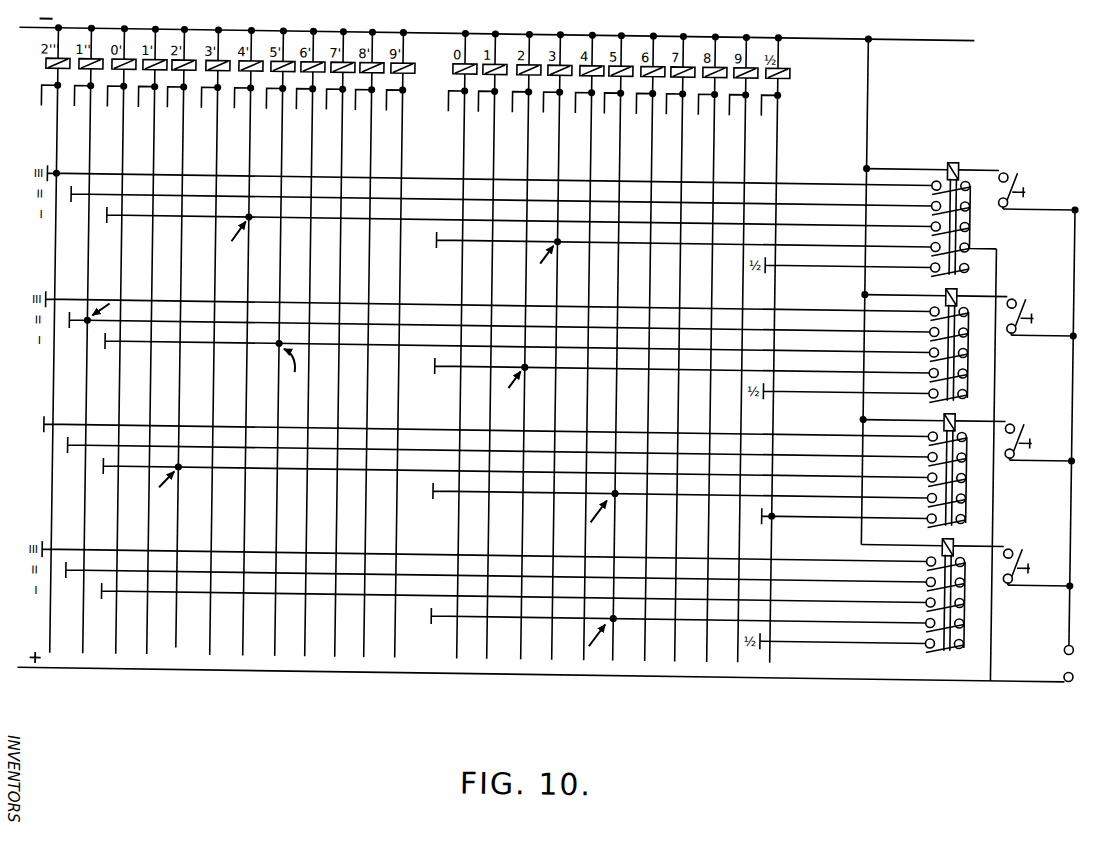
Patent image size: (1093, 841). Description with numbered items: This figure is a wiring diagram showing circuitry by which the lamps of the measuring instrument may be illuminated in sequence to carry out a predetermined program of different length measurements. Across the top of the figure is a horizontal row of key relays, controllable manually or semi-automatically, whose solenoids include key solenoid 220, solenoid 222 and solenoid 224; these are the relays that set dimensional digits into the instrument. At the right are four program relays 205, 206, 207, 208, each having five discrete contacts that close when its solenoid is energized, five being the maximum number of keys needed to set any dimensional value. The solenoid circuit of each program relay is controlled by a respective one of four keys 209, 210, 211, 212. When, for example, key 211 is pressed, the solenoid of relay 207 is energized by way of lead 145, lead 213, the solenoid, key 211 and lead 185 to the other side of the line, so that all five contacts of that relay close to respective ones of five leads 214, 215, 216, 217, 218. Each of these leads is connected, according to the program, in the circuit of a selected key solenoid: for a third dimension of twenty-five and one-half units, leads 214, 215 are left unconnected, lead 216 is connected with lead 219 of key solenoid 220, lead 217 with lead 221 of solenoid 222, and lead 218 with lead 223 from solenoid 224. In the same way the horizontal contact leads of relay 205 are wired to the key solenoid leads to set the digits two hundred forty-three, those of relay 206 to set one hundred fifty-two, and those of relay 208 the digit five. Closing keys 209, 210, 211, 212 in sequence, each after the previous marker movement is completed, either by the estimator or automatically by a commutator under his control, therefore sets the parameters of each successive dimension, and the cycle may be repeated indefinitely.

The lead 145 is at (446, 33).
The key solenoid 220 is at (154, 63).
The solenoid 222 is at (624, 64).
The solenoid 224 is at (786, 69).
The lead 213 is at (864, 128).
The lead 223 is at (777, 161).
The key 209 is at (1015, 171).
The key 210 is at (1016, 291).
The key 211 is at (1014, 417).
The key 212 is at (1019, 540).
The relay 205 is at (978, 222).
The relay 206 is at (978, 347).
The relay 207 is at (974, 464).
The relay 208 is at (977, 583).
The lead 185 is at (1073, 517).
The lead 214 is at (409, 428).
The lead 215 is at (421, 449).
The lead 216 is at (416, 473).
The lead 217 is at (449, 494).
The lead 218 is at (796, 514).
The lead 219 is at (180, 652).
The lead 221 is at (615, 659).